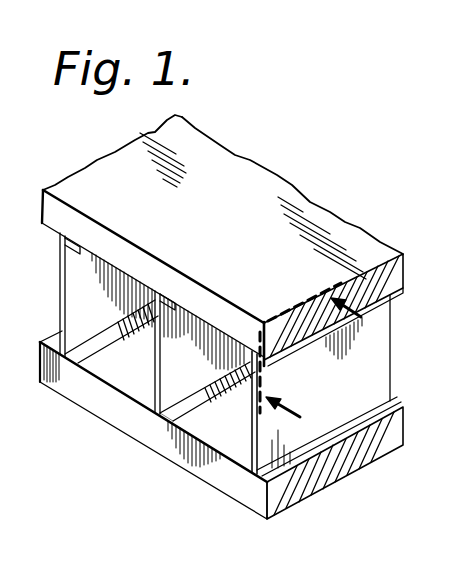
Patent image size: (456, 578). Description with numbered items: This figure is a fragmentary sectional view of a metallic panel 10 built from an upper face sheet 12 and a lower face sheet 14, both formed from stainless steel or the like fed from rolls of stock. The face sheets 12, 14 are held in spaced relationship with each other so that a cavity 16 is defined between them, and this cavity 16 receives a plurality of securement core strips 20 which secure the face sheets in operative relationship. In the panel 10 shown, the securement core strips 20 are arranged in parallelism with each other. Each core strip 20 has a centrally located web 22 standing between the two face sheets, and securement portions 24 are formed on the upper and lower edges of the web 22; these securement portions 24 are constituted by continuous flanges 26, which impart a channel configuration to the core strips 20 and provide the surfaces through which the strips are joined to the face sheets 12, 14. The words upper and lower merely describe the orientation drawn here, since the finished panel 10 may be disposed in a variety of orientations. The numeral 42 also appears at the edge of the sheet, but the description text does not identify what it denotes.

The metallic panel 10 is at (328, 199).
The upper face sheet 12 is at (243, 172).
The lower face sheet 14 is at (147, 432).
The cavity 16 is at (233, 433).
The securement core strip 20 is at (84, 304).
The web 22 is at (371, 358).
The securement portion 24 is at (401, 282).
The continuous flange 26 is at (395, 293).
The edge member 42 is at (446, 226).